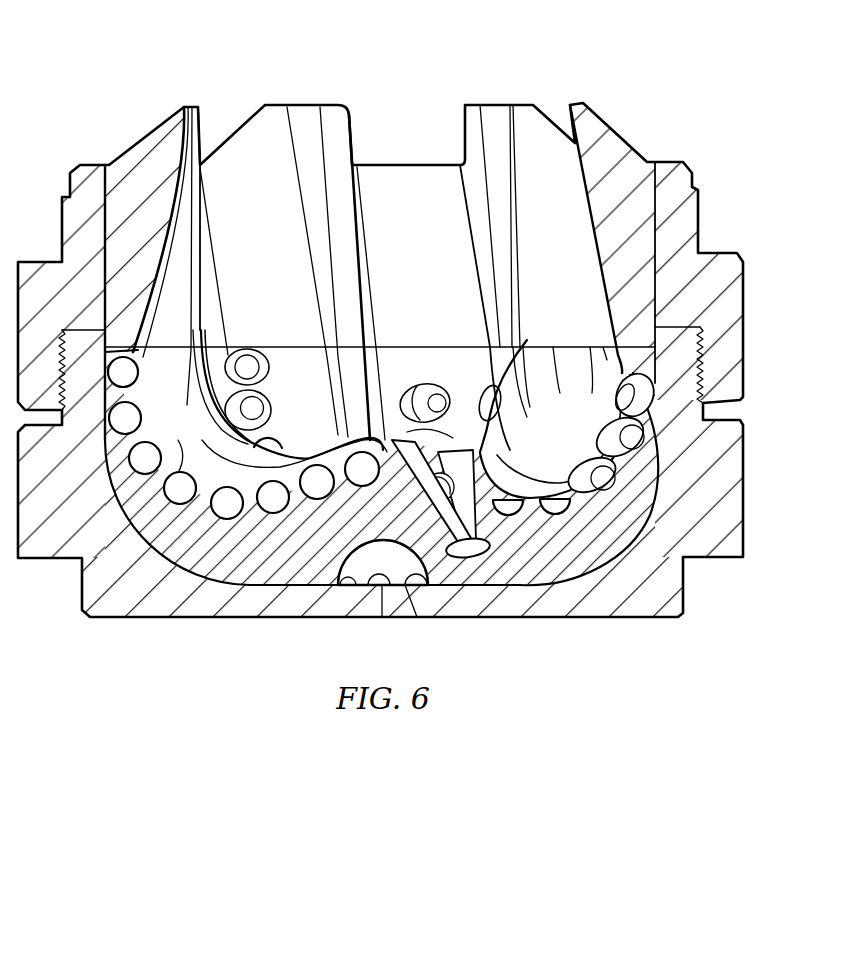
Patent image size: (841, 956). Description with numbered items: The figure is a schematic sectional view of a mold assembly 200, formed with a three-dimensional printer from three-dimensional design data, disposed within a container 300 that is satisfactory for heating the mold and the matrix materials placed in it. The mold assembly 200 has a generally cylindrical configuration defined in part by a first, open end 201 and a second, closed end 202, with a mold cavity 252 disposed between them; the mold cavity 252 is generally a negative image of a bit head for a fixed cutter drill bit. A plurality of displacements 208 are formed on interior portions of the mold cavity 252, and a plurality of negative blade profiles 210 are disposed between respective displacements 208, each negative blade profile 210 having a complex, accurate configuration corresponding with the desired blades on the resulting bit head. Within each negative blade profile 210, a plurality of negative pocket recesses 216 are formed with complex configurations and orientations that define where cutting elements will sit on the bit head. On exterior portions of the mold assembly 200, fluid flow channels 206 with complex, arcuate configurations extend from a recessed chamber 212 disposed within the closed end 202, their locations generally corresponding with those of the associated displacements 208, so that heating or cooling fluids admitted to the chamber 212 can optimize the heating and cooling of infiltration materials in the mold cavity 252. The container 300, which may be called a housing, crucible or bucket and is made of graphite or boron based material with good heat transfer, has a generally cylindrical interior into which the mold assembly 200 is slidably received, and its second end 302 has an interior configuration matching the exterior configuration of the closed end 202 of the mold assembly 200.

The mold assembly 200 is at (531, 71).
The first, open end 201 is at (180, 105).
The second, closed end 202 is at (527, 586).
The fluid flow channels 206 is at (382, 585).
The displacements 208 is at (303, 123).
The negative blade profiles 210 is at (413, 182).
The recessed portion or chamber 212 is at (405, 586).
The negative pocket recesses 216 is at (262, 354).
The mold cavity 252 is at (400, 253).
The container 300 is at (109, 645).
The second end of container 302 is at (747, 497).